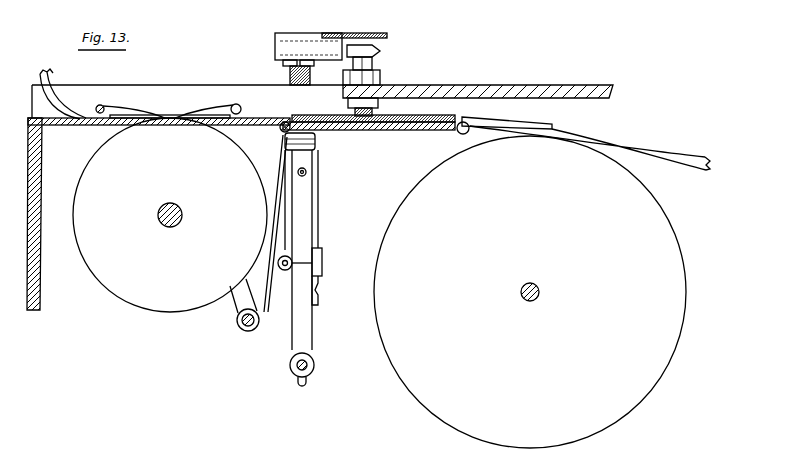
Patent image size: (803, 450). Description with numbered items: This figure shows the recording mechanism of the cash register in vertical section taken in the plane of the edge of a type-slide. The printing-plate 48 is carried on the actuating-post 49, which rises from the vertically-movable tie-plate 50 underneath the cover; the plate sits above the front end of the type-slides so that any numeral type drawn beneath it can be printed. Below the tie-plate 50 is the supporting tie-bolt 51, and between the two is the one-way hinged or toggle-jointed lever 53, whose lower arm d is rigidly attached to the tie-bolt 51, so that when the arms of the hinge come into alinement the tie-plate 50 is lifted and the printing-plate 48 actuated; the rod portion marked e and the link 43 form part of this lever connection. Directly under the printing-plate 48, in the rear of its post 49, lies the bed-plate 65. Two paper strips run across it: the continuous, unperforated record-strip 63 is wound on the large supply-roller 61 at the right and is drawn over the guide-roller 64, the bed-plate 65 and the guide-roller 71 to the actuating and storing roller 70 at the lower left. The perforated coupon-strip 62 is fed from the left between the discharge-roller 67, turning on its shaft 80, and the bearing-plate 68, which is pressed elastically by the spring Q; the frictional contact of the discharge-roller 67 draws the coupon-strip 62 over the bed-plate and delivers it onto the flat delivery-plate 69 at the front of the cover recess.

The printing-plate 48 is at (318, 38).
The actuating-post 49 is at (288, 77).
The coupon-strip 62 is at (57, 84).
The spring Q is at (168, 105).
The bearing-plate 68 is at (170, 115).
The delivery-plate 69 is at (70, 125).
The discharge-roller 67 is at (170, 215).
The roll shaft 80 is at (181, 215).
The guide-roller 71 is at (280, 129).
The bed-plate 65 is at (366, 131).
The guide-roller 64 is at (458, 133).
The continuous record-strip 63 is at (530, 292).
The supply-roller 61 is at (540, 292).
The tie-plate 50 is at (312, 209).
The toggle-jointed lever 53 is at (310, 276).
The link 43 is at (275, 223).
The actuating and storing roller 70 is at (259, 325).
The tie-bolt 51 is at (309, 365).
The rod upper part e is at (302, 223).
The lower arm d is at (303, 308).